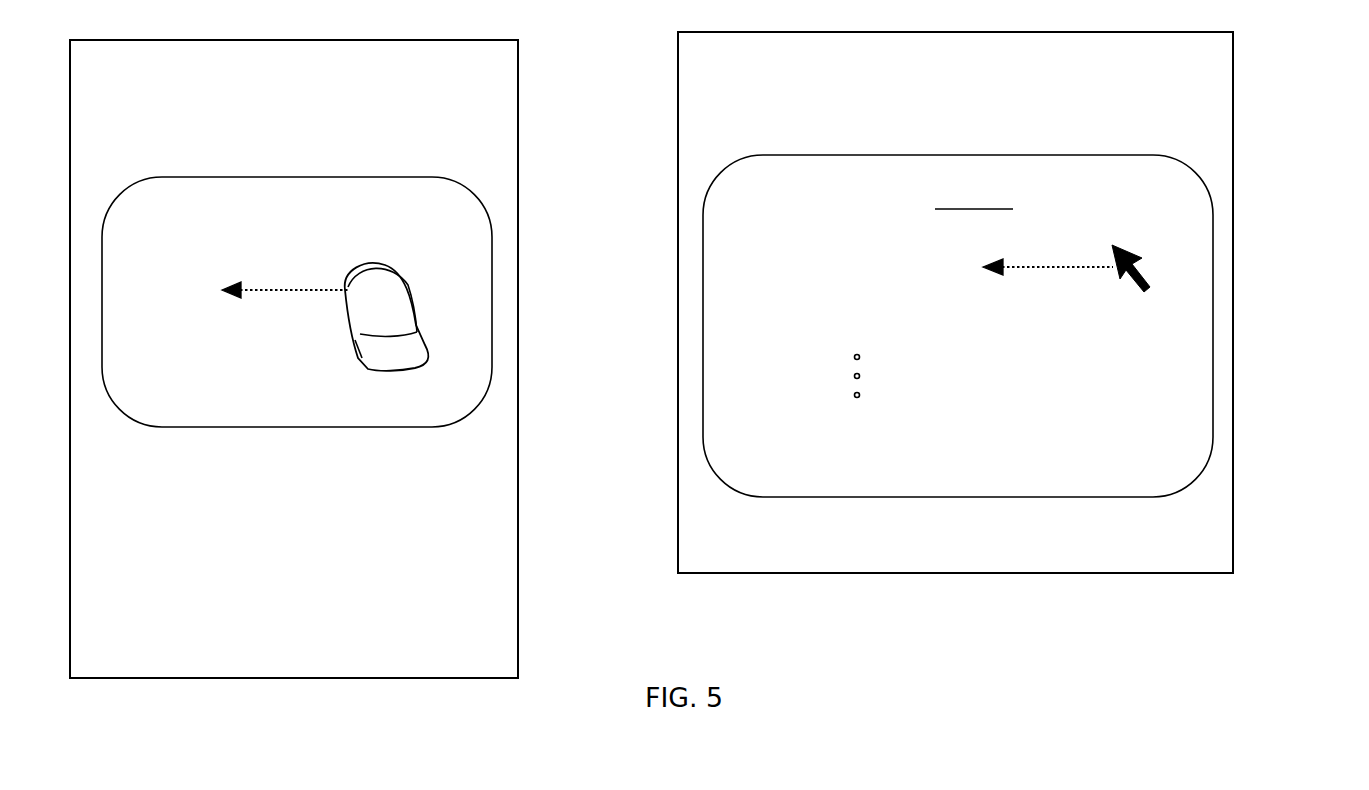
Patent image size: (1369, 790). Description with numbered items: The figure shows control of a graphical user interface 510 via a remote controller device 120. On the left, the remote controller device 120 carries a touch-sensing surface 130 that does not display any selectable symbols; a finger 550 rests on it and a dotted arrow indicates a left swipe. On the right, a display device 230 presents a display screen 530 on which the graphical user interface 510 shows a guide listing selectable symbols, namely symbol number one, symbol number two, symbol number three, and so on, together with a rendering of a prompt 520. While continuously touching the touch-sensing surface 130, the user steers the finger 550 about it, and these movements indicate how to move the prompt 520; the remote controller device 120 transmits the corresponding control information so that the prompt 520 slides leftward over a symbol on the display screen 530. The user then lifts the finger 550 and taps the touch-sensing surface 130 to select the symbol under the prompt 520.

The remote controller device 120 is at (277, 643).
The touch-sensing surface 130 is at (192, 173).
The finger 550 is at (380, 363).
The display device 230 is at (972, 112).
The display screen 530 is at (703, 340).
The graphical user interface 510 is at (735, 236).
The prompt 520 is at (1152, 278).